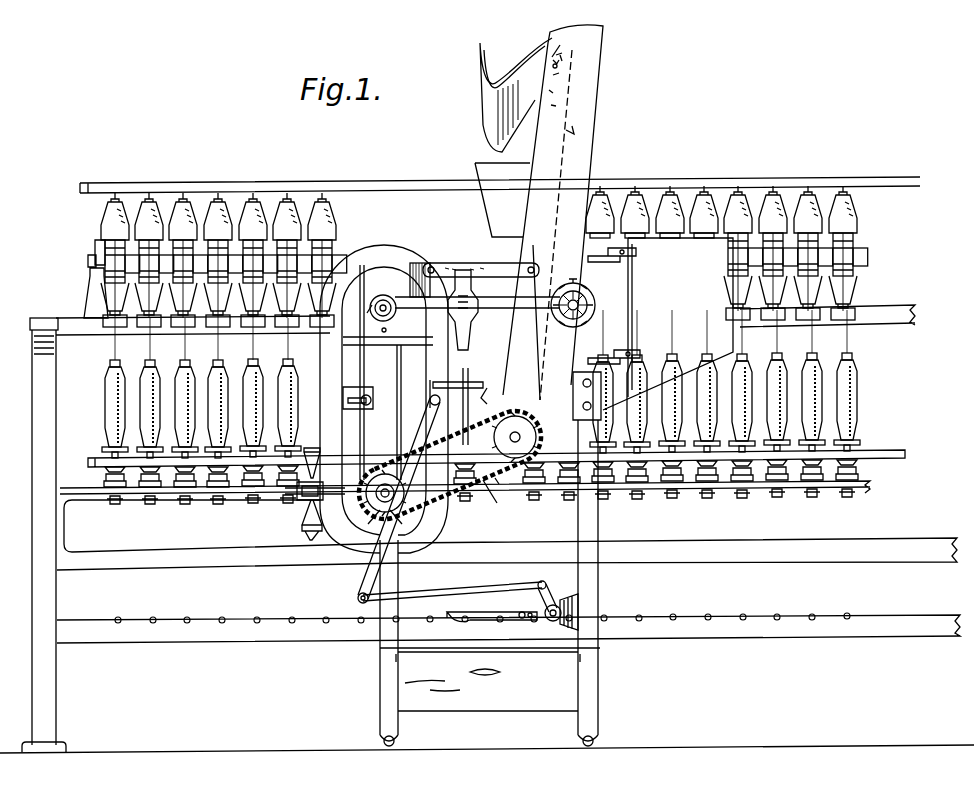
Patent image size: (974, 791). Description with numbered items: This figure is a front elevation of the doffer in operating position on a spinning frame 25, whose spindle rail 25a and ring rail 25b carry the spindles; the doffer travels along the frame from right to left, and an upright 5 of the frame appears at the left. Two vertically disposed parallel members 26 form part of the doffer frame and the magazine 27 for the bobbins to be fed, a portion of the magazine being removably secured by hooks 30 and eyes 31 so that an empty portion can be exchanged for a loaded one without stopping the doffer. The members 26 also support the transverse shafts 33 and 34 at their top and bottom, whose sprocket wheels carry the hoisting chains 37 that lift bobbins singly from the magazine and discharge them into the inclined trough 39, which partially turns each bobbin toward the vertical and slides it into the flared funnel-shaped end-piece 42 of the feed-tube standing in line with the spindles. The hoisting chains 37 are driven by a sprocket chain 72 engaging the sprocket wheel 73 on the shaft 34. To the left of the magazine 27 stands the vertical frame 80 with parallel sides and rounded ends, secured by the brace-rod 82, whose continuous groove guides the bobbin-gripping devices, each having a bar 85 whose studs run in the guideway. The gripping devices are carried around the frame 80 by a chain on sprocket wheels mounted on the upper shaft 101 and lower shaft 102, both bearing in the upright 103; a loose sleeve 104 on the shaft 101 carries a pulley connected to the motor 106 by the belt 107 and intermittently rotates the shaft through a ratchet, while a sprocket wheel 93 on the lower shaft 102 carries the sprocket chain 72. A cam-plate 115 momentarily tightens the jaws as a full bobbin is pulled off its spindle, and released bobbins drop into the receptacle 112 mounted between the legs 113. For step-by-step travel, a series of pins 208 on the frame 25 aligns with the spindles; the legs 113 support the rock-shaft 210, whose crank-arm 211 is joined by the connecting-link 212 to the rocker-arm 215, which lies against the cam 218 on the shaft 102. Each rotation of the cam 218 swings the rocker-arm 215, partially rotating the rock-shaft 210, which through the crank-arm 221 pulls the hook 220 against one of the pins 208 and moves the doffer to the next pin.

The frame post 5 is at (32, 368).
The spinning frame 25 is at (100, 196).
The spindle rail 25a is at (872, 486).
The ring rail 25b is at (873, 450).
The vertically disposed parallel members 26 is at (592, 84).
The magazine 27 is at (668, 324).
The hooks 30 is at (630, 262).
The eyes 31 is at (606, 252).
The transverse shaft 33 is at (565, 47).
The transverse shaft 34 is at (517, 432).
The hoisting chains 37 is at (532, 150).
The inclined trough 39 is at (491, 103).
The funnel-shaped end-piece 42 is at (476, 256).
The sprocket chain 72 is at (450, 500).
The sprocket wheel 73 is at (510, 492).
The frame 80 is at (324, 355).
The brace-rod 82 is at (525, 264).
The bar 85 is at (302, 498).
The sprocket 93 is at (385, 497).
The transverse shaft 101 is at (390, 309).
The shaft 102 is at (384, 486).
The upright 103 is at (425, 388).
The loose sleeve 104 is at (361, 357).
The motor 106 is at (586, 283).
The belt 107 is at (477, 322).
The receptacle 112 is at (488, 681).
The legs 113 is at (380, 666).
The cam-plate 115 is at (478, 372).
The pins 208 is at (255, 618).
The rock-shaft 210 is at (556, 604).
The crank-arm 211 is at (536, 584).
The connecting-link 212 is at (450, 592).
The rocker-arm 215 is at (357, 606).
The cam 218 is at (382, 520).
The hook 220 is at (500, 612).
The crank-arm 221 is at (537, 622).